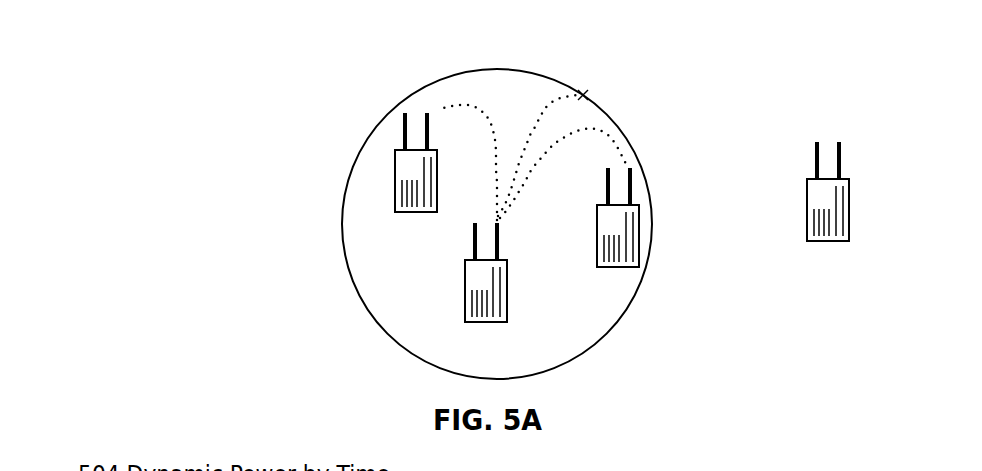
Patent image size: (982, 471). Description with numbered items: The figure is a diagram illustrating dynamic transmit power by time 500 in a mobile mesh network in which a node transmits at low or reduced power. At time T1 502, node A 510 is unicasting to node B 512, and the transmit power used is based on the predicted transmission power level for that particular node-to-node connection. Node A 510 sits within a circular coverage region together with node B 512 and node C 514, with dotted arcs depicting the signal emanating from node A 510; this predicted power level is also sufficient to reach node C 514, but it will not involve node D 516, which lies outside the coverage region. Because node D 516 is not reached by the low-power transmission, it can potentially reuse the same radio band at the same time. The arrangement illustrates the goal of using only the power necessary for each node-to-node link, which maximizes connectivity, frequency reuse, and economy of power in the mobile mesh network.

The dynamic transmit power by time 500 is at (108, 20).
The time T1 502 is at (358, 201).
The node A 510 is at (494, 333).
The node B 512 is at (413, 218).
The node C 514 is at (615, 273).
The node D 516 is at (800, 165).